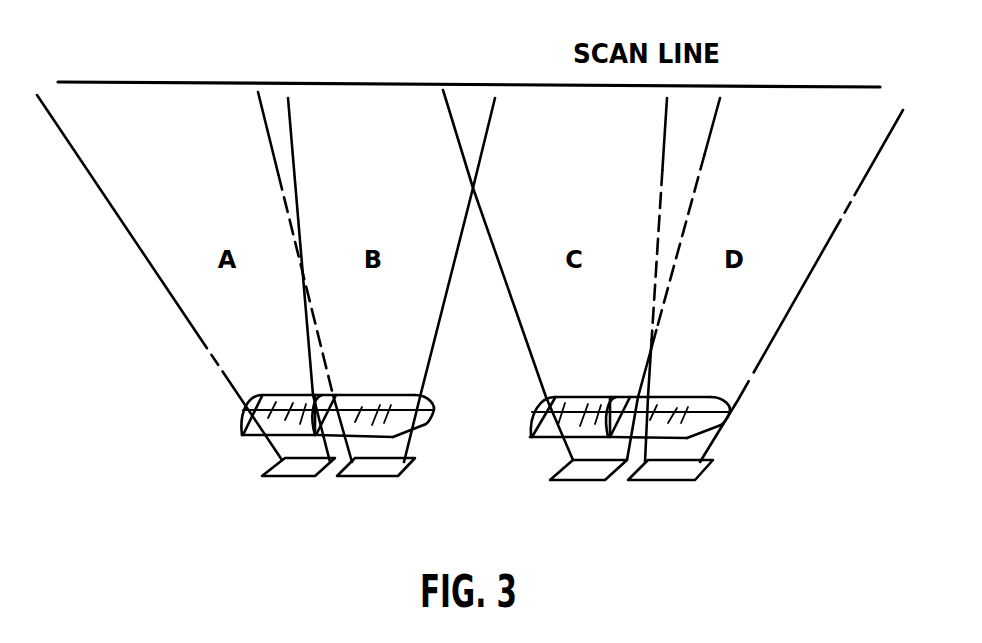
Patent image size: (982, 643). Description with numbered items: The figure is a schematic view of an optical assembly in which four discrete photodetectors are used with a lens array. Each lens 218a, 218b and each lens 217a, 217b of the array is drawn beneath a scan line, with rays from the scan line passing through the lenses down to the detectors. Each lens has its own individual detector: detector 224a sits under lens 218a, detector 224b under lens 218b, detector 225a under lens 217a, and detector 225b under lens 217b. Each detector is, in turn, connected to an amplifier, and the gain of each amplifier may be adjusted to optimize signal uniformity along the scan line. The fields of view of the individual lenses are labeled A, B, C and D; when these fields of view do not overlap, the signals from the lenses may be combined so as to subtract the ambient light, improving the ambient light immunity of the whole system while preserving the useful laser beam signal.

The lens 217a is at (533, 438).
The lens 217b is at (705, 440).
The lens 218a is at (242, 436).
The lens 218b is at (426, 438).
The detector 224a is at (275, 480).
The detector 224b is at (340, 478).
The detector 225a is at (604, 481).
The detector 225b is at (676, 481).